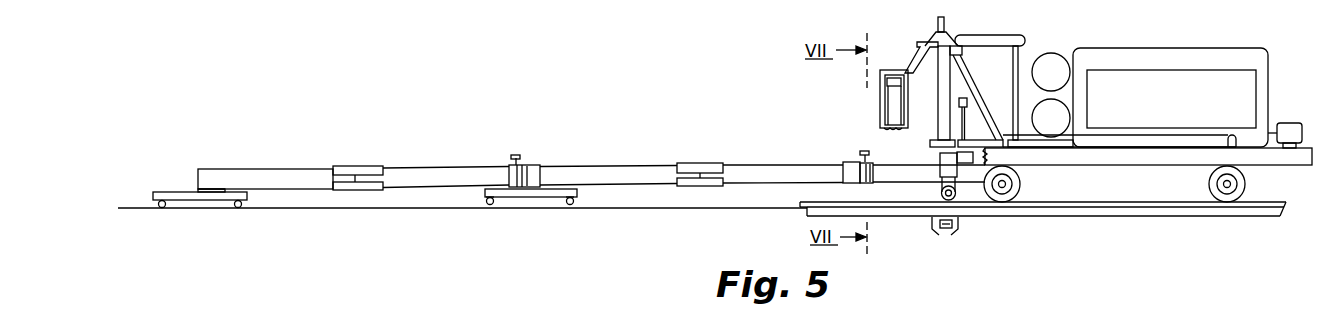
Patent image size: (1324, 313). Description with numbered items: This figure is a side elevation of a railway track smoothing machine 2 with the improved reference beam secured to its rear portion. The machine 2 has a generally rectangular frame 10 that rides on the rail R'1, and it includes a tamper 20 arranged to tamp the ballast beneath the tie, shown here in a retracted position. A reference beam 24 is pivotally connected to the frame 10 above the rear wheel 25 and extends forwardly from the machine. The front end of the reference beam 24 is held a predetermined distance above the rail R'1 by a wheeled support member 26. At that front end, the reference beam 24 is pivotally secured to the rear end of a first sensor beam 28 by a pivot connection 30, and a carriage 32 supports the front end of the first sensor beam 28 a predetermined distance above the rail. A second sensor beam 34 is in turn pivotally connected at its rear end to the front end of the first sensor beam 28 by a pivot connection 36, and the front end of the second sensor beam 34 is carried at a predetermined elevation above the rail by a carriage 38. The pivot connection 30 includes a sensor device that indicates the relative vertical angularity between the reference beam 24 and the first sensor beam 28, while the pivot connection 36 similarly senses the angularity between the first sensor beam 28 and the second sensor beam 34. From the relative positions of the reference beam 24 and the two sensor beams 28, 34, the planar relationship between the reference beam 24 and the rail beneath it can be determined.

The railway track smoothing machine 2 is at (1165, 45).
The frame 10 is at (1138, 165).
The tamper 20 is at (958, 226).
The reference beam 24 is at (1158, 138).
The rear wheel 25 is at (1246, 184).
The wheeled support member 26 is at (940, 194).
The first sensor beam 28 is at (655, 164).
The pivot connection 30 is at (853, 147).
The carriage 32 is at (529, 197).
The second sensor beam 34 is at (424, 165).
The pivot connection 36 is at (525, 158).
The carriage 38 is at (169, 192).
The rail R'1 is at (1043, 223).